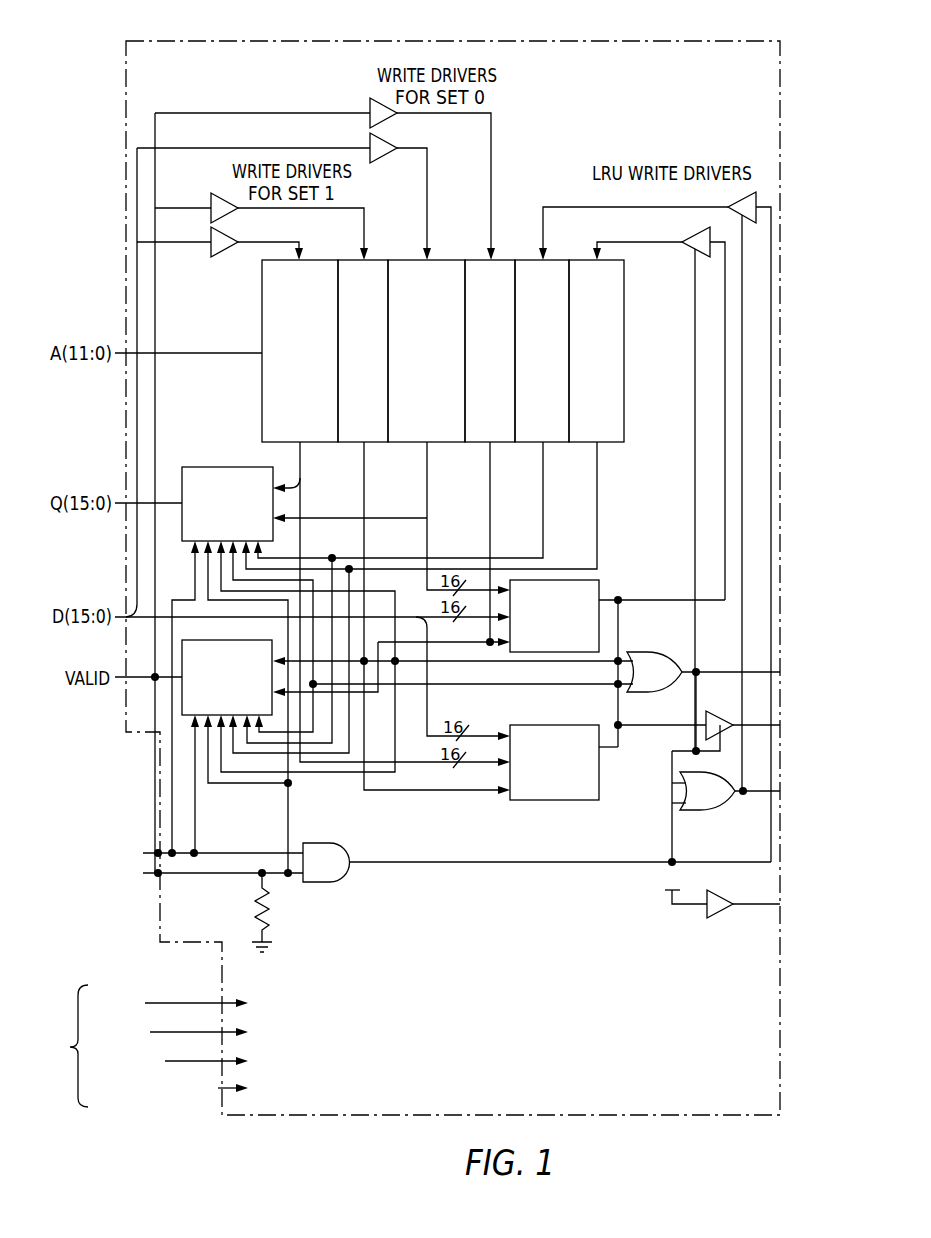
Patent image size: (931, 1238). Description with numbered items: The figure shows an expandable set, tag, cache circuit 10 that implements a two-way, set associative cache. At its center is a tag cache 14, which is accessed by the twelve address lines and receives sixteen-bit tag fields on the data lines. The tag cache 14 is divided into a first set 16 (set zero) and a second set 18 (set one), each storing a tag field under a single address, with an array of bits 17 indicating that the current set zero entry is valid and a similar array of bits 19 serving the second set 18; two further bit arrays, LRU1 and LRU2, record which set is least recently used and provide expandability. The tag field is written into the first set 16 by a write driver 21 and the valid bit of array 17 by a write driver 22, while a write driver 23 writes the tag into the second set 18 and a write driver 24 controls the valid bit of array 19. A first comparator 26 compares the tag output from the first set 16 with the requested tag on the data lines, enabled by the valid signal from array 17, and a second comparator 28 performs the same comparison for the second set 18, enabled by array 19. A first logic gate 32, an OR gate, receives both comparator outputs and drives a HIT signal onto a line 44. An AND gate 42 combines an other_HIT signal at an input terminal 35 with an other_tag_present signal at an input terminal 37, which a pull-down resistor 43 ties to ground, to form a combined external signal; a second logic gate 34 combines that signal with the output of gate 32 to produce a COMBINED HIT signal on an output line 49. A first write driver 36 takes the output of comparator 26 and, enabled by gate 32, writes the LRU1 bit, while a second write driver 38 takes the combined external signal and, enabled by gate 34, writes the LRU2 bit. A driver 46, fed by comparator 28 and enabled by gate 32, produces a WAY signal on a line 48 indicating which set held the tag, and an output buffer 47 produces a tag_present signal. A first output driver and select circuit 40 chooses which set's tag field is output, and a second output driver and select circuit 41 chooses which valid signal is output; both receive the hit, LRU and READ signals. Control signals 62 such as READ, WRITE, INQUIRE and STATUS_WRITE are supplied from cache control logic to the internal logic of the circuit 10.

The expandable set, tag, cache circuit 10 is at (783, 72).
The tag cache 14 is at (646, 329).
The first set 16 is at (432, 259).
The array of bits 17 is at (495, 259).
The second set 18 is at (262, 287).
The array of bits 19 is at (372, 259).
The write driver 21 is at (386, 139).
The write driver 22 is at (370, 104).
The write driver 23 is at (226, 233).
The write driver 24 is at (211, 197).
The first comparator 26 is at (599, 586).
The second comparator 28 is at (599, 793).
The first logic gate 32 is at (644, 654).
The second logic gate 34 is at (718, 811).
The input terminal 35 is at (157, 852).
The first write driver 36 is at (696, 233).
The input terminal 37 is at (161, 876).
The second write driver 38 is at (740, 197).
The first output driver and select circuit 40 is at (226, 467).
The second output driver and select circuit 41 is at (228, 640).
The AND gate 42 is at (342, 882).
The resistor 43 is at (270, 910).
The line 44 is at (783, 668).
The driver 46 is at (722, 712).
The output buffer 47 is at (718, 916).
The line 48 is at (783, 723).
The output line 49 is at (783, 790).
The control signals 62 is at (236, 1046).